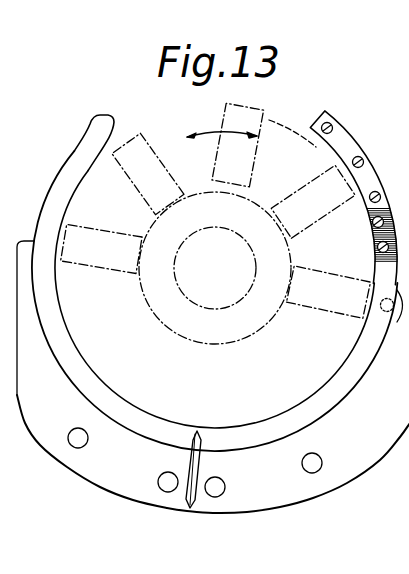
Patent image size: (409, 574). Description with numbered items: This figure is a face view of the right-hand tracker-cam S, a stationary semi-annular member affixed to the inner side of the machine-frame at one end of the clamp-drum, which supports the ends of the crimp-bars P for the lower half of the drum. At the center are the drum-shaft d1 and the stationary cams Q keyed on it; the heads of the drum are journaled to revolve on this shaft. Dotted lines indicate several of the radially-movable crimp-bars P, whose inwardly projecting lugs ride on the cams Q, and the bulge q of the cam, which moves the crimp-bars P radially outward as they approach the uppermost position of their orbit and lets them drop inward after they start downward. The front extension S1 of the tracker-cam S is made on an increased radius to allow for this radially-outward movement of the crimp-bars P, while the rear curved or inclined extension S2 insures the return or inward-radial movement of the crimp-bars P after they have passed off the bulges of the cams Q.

The right-hand tracker-cam S is at (217, 285).
The front extension of the tracker-cam S1 is at (345, 127).
The rear curved or inclined extension S2 is at (114, 118).
The crimp-bars P is at (122, 273).
The stationary cams Q is at (170, 329).
The drum-shaft d1 is at (215, 268).
The bulges q is at (257, 200).